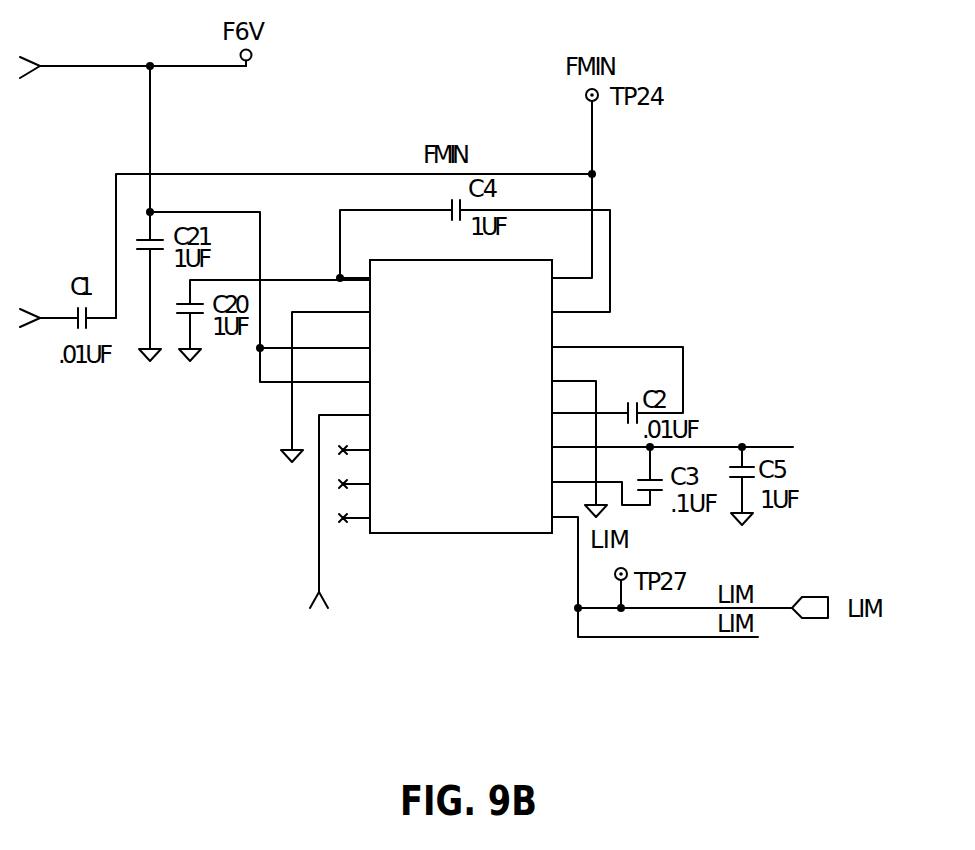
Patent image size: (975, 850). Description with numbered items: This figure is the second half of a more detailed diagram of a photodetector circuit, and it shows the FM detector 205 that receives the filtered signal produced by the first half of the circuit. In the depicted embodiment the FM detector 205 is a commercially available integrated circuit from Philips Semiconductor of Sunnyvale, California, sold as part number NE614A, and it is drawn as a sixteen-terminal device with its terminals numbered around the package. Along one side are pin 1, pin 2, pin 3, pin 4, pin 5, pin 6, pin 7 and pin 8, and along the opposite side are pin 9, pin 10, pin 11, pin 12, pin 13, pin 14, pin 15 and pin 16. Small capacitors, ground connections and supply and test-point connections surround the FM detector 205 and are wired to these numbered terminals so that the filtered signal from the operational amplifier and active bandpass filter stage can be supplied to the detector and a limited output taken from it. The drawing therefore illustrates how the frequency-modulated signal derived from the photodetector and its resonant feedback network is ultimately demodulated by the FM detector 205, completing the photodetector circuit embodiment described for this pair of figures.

The FM detector 205 is at (462, 409).
The U3 pin 1 IFDEC 1 is at (355, 266).
The U3 pin 2 GND 2 is at (355, 300).
The U3 pin 3 MUTE 3 is at (355, 335).
The U3 pin 4 VCC 4 is at (355, 369).
The U3 pin 5 RSSI 5 is at (355, 403).
The U3 pin 6 MAUD 6 is at (356, 438).
The U3 pin 7 AUD 7 is at (356, 472).
The U3 pin 8 REF0 8 is at (356, 506).
The U3 pin 9 LIM 9 is at (565, 506).
The U3 pin 10 LIMDEC 10 is at (568, 472).
The U3 pin 11 LIMDEC 11 is at (568, 438).
The U3 pin 12 LIMIN 12 is at (568, 403).
The U3 pin 13 GND 13 is at (568, 369).
The U3 pin 14 IFOUT 14 is at (568, 335).
The U3 pin 15 IFDEC 15 is at (568, 300).
The U3 pin 16 IF_IN 16 is at (568, 266).